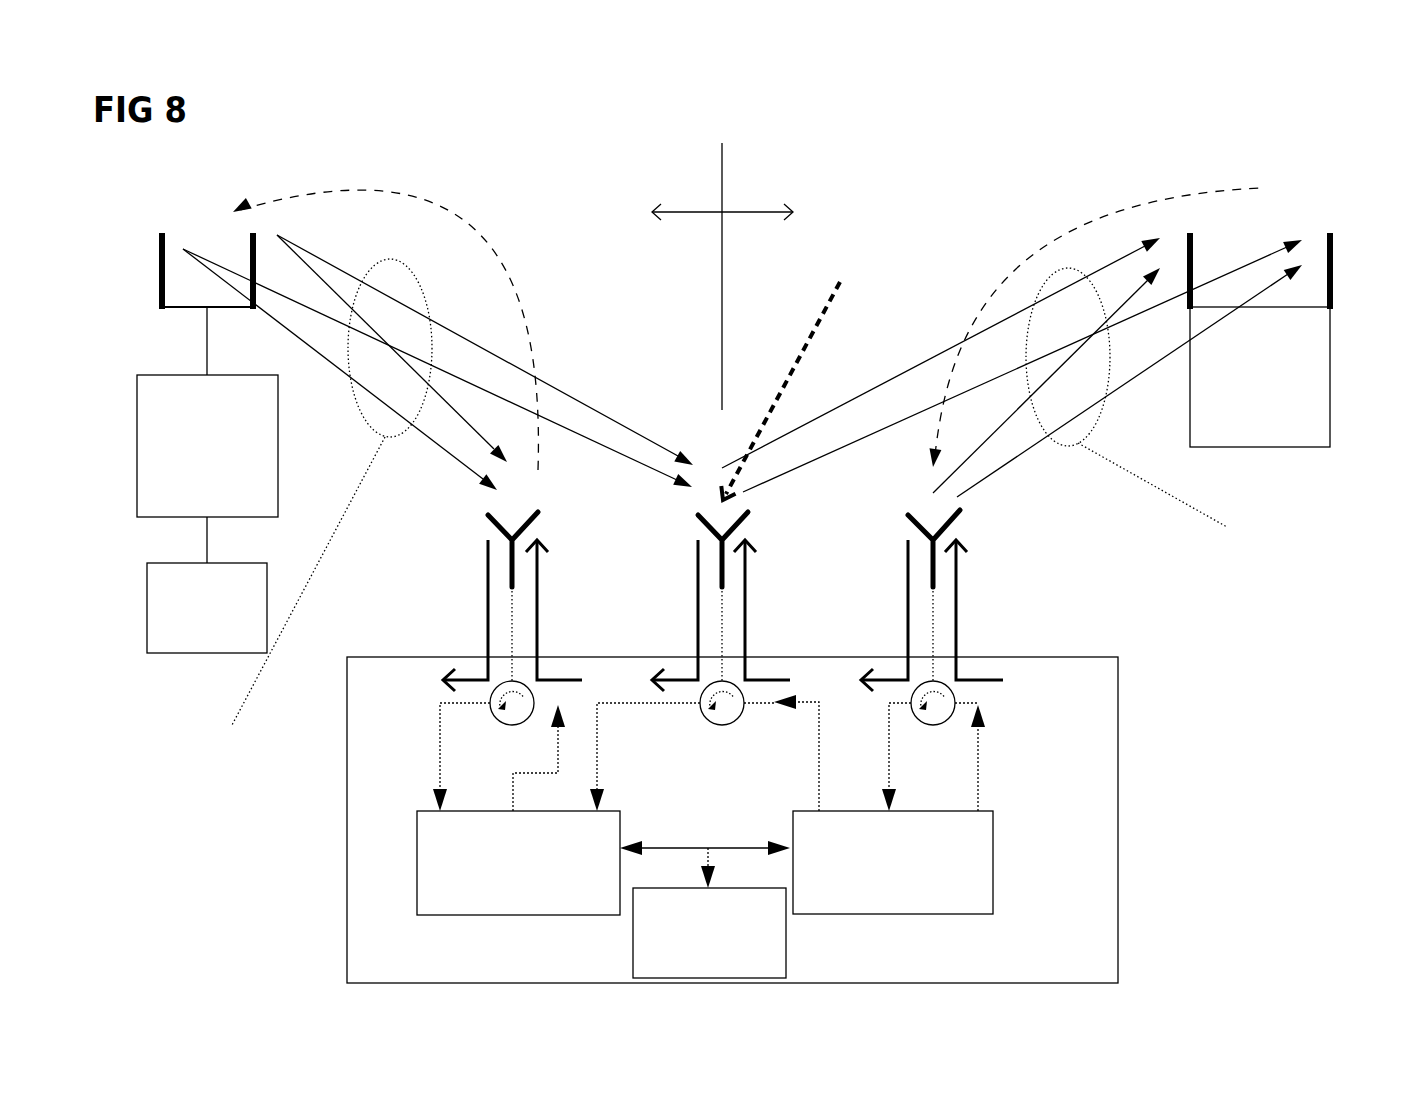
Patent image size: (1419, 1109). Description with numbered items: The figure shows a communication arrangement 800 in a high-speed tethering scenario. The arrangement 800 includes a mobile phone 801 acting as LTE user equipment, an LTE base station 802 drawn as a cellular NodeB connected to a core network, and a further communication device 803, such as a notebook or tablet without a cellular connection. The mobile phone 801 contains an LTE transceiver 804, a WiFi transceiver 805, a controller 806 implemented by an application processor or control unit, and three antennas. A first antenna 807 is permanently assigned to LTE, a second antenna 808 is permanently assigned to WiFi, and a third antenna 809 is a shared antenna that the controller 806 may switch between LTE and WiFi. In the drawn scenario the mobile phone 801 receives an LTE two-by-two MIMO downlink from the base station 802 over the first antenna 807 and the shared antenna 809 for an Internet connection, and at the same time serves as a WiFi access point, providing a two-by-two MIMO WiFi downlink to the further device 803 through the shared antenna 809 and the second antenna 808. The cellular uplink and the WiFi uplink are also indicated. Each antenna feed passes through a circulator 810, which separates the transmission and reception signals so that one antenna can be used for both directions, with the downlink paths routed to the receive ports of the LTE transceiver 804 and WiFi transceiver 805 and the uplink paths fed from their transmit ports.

The communication arrangement 800 is at (1287, 122).
The mobile phone 801 is at (1105, 657).
The LTE base station 802 is at (137, 377).
The further communication device 803 is at (1330, 349).
The LTE transceiver 804 is at (430, 797).
The WiFi transceiver 805 is at (990, 801).
The controller 806 is at (784, 959).
The first antenna 807 is at (530, 503).
The second antenna 808 is at (958, 500).
The third antenna 809 is at (743, 503).
The circulator 810 is at (513, 730).